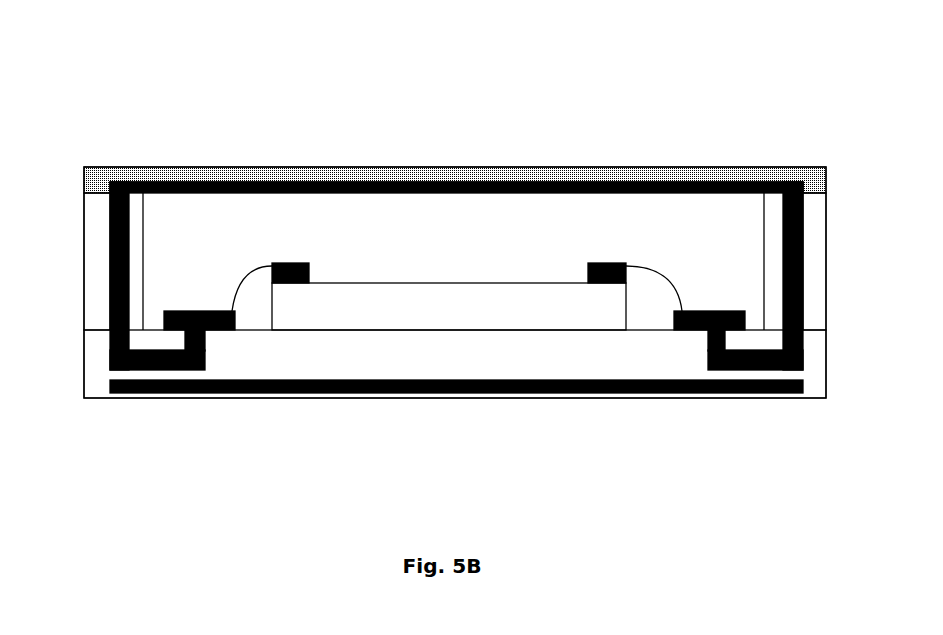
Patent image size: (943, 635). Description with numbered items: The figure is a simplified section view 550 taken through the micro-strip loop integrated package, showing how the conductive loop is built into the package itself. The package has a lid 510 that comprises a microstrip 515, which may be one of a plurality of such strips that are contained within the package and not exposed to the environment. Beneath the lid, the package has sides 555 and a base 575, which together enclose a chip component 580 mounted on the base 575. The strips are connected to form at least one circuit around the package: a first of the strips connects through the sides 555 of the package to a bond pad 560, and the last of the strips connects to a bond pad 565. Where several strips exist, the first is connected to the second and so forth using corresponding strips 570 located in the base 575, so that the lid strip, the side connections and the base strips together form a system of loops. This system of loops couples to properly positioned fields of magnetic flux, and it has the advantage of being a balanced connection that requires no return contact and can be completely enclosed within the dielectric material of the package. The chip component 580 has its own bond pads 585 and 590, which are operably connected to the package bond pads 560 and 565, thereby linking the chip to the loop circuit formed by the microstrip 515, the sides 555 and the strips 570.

The section view 550 is at (69, 19).
The lid 510 is at (772, 157).
The sides 555 is at (78, 194).
The microstrip 515 is at (598, 174).
The base 575 is at (455, 364).
The strips 570 is at (333, 402).
The chip component 580 is at (449, 306).
The bond pad 560 is at (190, 297).
The bond pad 565 is at (712, 297).
The bond pad 585 is at (313, 252).
The bond pad 590 is at (591, 252).